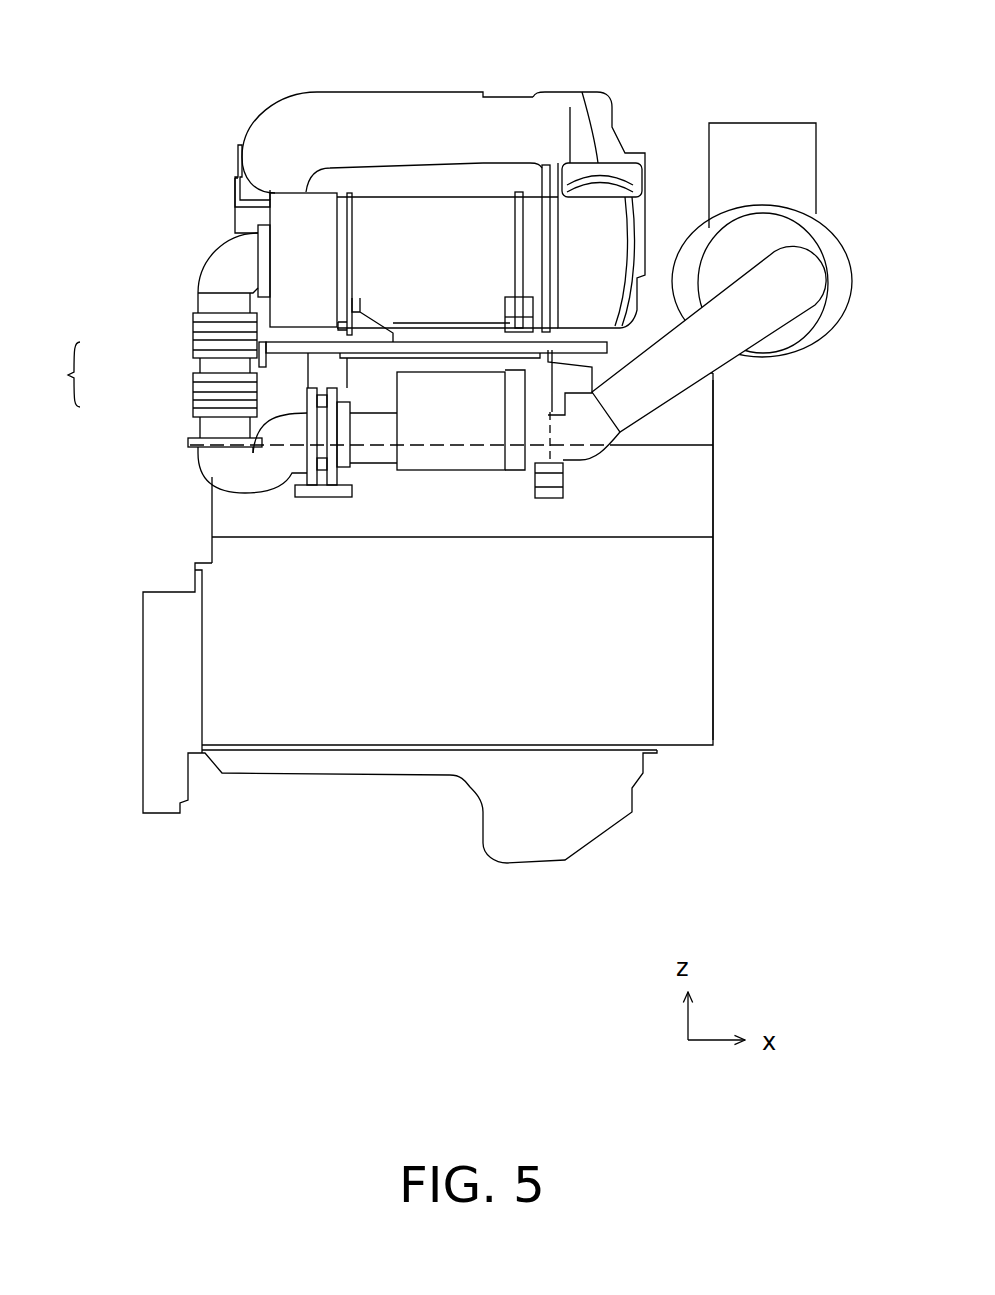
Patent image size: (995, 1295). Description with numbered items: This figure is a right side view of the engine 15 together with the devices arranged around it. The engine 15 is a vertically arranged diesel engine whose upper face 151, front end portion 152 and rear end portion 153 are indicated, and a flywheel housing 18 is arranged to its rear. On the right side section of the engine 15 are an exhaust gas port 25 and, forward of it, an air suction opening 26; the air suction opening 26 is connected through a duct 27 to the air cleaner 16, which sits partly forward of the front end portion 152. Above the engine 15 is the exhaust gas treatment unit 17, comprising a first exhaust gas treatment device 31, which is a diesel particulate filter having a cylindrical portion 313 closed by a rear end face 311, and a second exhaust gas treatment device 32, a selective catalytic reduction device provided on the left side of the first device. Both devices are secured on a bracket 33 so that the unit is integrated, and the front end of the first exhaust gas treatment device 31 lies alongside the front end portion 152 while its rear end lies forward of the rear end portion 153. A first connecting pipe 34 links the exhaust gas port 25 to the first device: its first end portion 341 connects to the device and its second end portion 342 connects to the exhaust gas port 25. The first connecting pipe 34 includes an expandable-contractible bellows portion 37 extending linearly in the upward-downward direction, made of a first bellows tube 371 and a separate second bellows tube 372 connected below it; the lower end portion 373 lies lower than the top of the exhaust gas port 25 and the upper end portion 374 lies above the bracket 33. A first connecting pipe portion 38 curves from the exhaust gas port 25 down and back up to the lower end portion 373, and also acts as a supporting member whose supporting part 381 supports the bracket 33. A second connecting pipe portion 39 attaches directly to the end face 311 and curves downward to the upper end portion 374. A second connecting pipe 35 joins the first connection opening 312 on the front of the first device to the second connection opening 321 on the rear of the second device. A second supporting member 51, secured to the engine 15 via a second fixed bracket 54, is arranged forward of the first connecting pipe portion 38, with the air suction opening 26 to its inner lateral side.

The engine 15 is at (193, 513).
The air cleaner 16 is at (822, 245).
The exhaust gas treatment unit 17 is at (213, 190).
The flywheel housing 18 is at (160, 663).
The exhaust gas port 25 is at (382, 455).
The air suction opening 26 is at (517, 455).
The duct 27 is at (708, 348).
The first exhaust gas treatment device 31 is at (396, 200).
The second exhaust gas treatment device 32 is at (246, 220).
The bracket 33 is at (288, 355).
The first connecting pipe 34 is at (186, 303).
The second connecting pipe 35 is at (361, 100).
The bellows portion 37 is at (54, 374).
The first connecting pipe portion 38 is at (273, 480).
The second connecting pipe portion 39 is at (215, 270).
The second supporting member 51 is at (558, 472).
The second fixed bracket 54 is at (552, 494).
The upper face 151 is at (450, 440).
The front end portion 152 is at (719, 463).
The rear end portion 153 is at (198, 621).
The end face 311 is at (256, 258).
The first connection opening 312 is at (572, 125).
The cylindrical portion 313 is at (322, 207).
The second connection opening 321 is at (240, 185).
The first end portion 341 is at (278, 232).
The second end portion 342 is at (368, 465).
The first bellows tube 371 is at (207, 333).
The second bellows tube 372 is at (200, 403).
The lower end portion 373 is at (222, 449).
The upper end portion 374 is at (230, 291).
The supporting part 381 is at (327, 497).